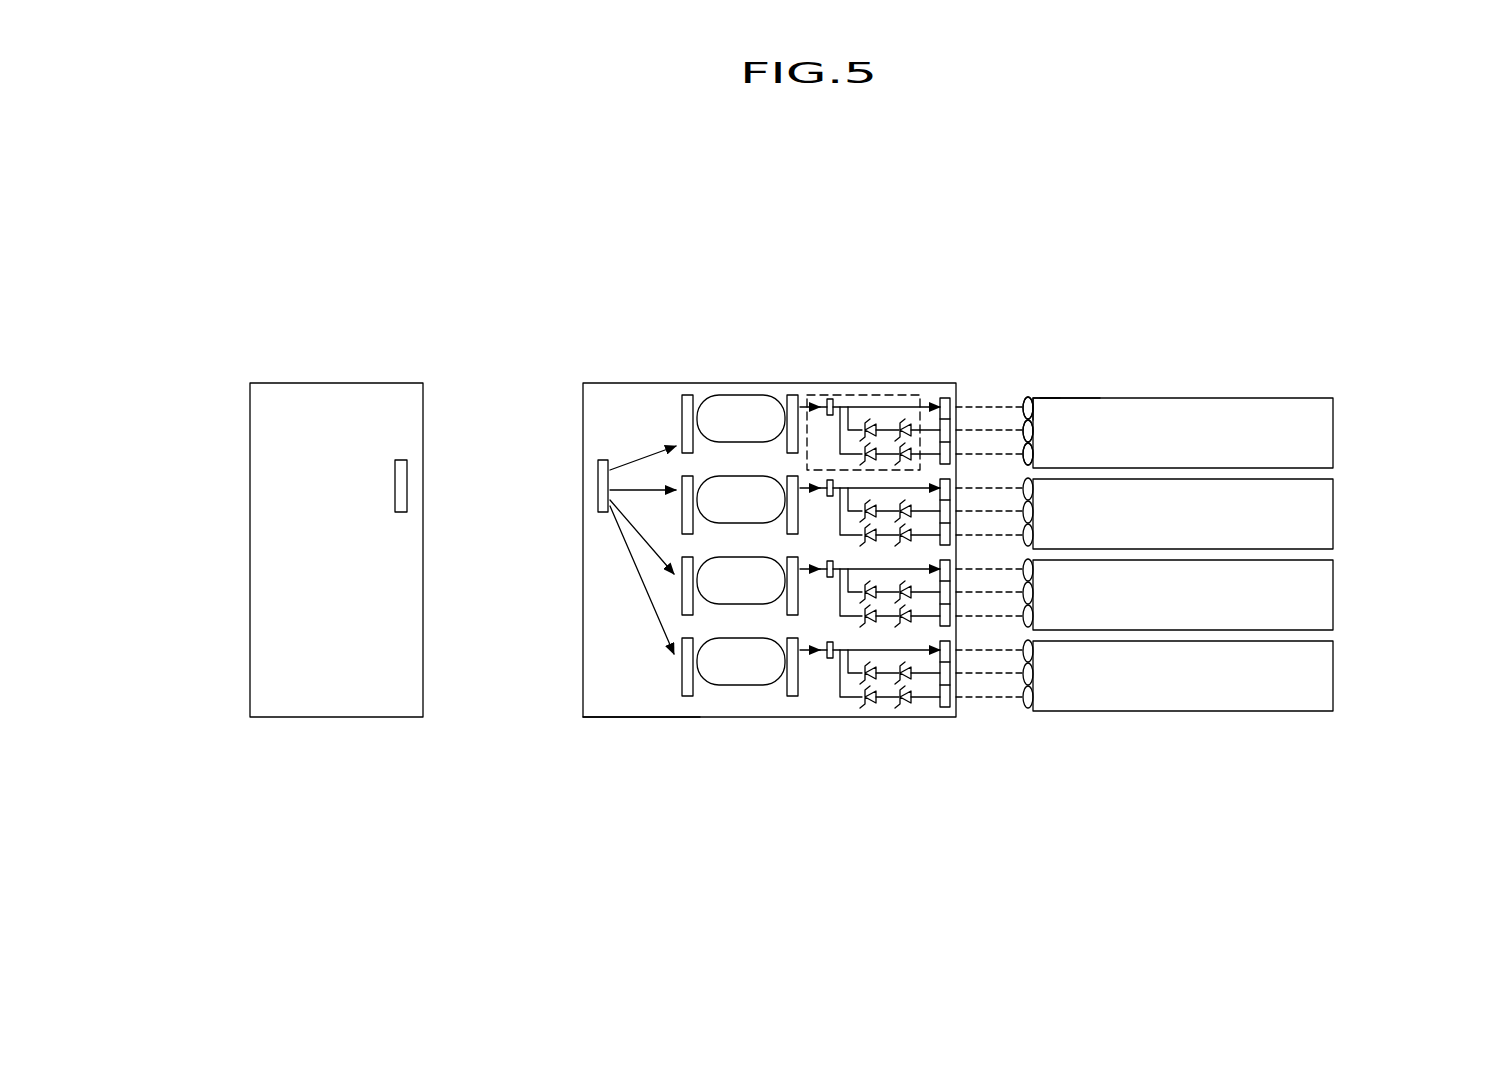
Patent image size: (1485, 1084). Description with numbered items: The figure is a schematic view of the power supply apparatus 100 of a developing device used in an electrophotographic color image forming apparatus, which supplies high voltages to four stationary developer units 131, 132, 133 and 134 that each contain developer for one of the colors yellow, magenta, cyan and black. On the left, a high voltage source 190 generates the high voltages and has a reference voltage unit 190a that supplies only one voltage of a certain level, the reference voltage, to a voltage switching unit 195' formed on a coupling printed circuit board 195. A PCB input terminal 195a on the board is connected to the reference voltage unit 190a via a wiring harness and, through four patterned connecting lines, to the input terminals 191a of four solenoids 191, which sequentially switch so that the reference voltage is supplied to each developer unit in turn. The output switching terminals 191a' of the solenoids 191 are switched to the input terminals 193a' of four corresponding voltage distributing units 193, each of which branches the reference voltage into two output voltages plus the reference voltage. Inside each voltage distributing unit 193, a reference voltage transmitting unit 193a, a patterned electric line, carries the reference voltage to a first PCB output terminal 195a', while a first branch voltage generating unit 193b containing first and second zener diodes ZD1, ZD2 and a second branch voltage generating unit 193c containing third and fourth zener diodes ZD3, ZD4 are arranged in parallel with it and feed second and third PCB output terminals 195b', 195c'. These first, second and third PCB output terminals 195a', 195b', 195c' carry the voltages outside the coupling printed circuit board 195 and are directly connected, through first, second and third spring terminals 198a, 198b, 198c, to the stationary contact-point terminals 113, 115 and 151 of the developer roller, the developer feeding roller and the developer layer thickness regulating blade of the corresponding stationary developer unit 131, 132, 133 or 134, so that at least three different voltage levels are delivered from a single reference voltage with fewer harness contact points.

The power supply apparatus 100 is at (414, 212).
The high voltage source 190 is at (250, 547).
The reference voltage unit 190a is at (410, 470).
The coupling printed circuit board 195 is at (769, 602).
The voltage switching unit 195' is at (641, 769).
The PCB input terminal 195a is at (566, 550).
The first PCB output terminal 195a' is at (951, 495).
The second PCB output terminal 195b' is at (989, 508).
The third PCB output terminal 195c' is at (1084, 512).
The solenoid 191 is at (742, 396).
The solenoid input terminal 191a is at (629, 515).
The output switching terminal 191a' is at (747, 499).
The voltage distributing unit 193 is at (858, 393).
The reference voltage transmitting unit 193a is at (998, 517).
The input terminal of voltage distributing unit 193a' is at (791, 458).
The first branch voltage generating unit 193b is at (840, 422).
The second branch voltage generating unit 193c is at (848, 414).
The first zener diode ZD1 is at (864, 425).
The second zener diode ZD2 is at (910, 425).
The third zener diode ZD3 is at (840, 518).
The fourth zener diode ZD4 is at (950, 450).
The first spring terminal 198a is at (1021, 400).
The second spring terminal 198b is at (1023, 398).
The third spring terminal 198c is at (1036, 463).
The stationary contact-point terminal of developer layer thickness regulating member 151 is at (1036, 455).
The stationary contact-point terminal of developer roller 113 is at (1030, 398).
The stationary contact-point terminal of developer feeding roller 115 is at (1038, 443).
The stationary developer unit 131 is at (1335, 430).
The stationary developer unit 132 is at (1335, 512).
The stationary developer unit 133 is at (1335, 592).
The stationary developer unit 134 is at (1335, 675).